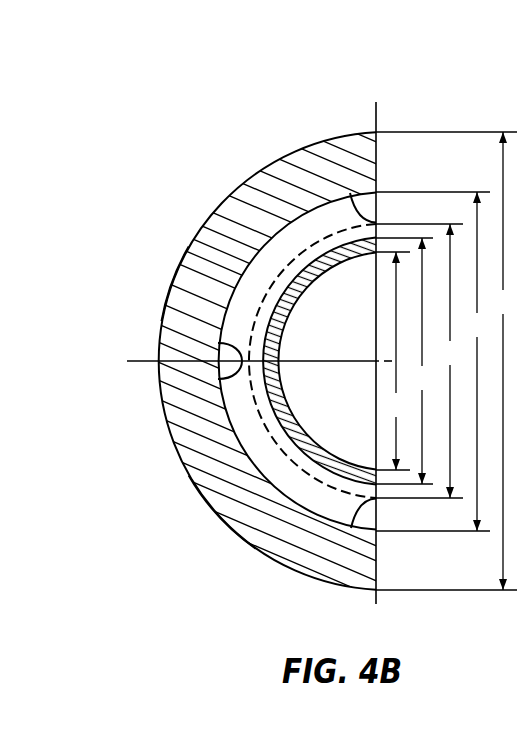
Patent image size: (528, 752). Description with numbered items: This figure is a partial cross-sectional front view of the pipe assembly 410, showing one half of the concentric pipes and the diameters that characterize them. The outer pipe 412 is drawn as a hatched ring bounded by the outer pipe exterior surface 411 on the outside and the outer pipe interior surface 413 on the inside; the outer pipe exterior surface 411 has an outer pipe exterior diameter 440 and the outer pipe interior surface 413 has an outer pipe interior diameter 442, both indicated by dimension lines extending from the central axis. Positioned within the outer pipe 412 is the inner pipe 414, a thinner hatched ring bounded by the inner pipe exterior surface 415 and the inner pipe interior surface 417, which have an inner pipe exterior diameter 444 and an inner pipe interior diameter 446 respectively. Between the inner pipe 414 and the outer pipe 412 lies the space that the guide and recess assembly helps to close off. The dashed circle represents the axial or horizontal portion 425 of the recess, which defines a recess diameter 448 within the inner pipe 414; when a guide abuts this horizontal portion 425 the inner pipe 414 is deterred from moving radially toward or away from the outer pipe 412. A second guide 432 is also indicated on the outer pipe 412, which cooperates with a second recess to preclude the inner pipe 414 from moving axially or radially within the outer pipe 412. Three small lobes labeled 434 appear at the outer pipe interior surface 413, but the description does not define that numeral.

The pipe assembly 410 is at (140, 162).
The outer pipe exterior surface 411 is at (298, 149).
The outer pipe 412 is at (262, 200).
The outer pipe interior surface 413 is at (310, 188).
The second guide 432 is at (180, 278).
The locating tabs 434 is at (350, 193).
The axial or horizontal portion of the recess 425 is at (263, 416).
The inner pipe 414 is at (292, 460).
The inner pipe exterior surface 415 is at (282, 500).
The inner pipe interior surface 417 is at (260, 551).
The outer pipe exterior diameter 440 is at (447, 361).
The outer pipe interior diameter 442 is at (434, 361).
The inner pipe exterior diameter 444 is at (420, 361).
The recess diameter 448 is at (406, 361).
The inner pipe interior diameter 446 is at (393, 361).